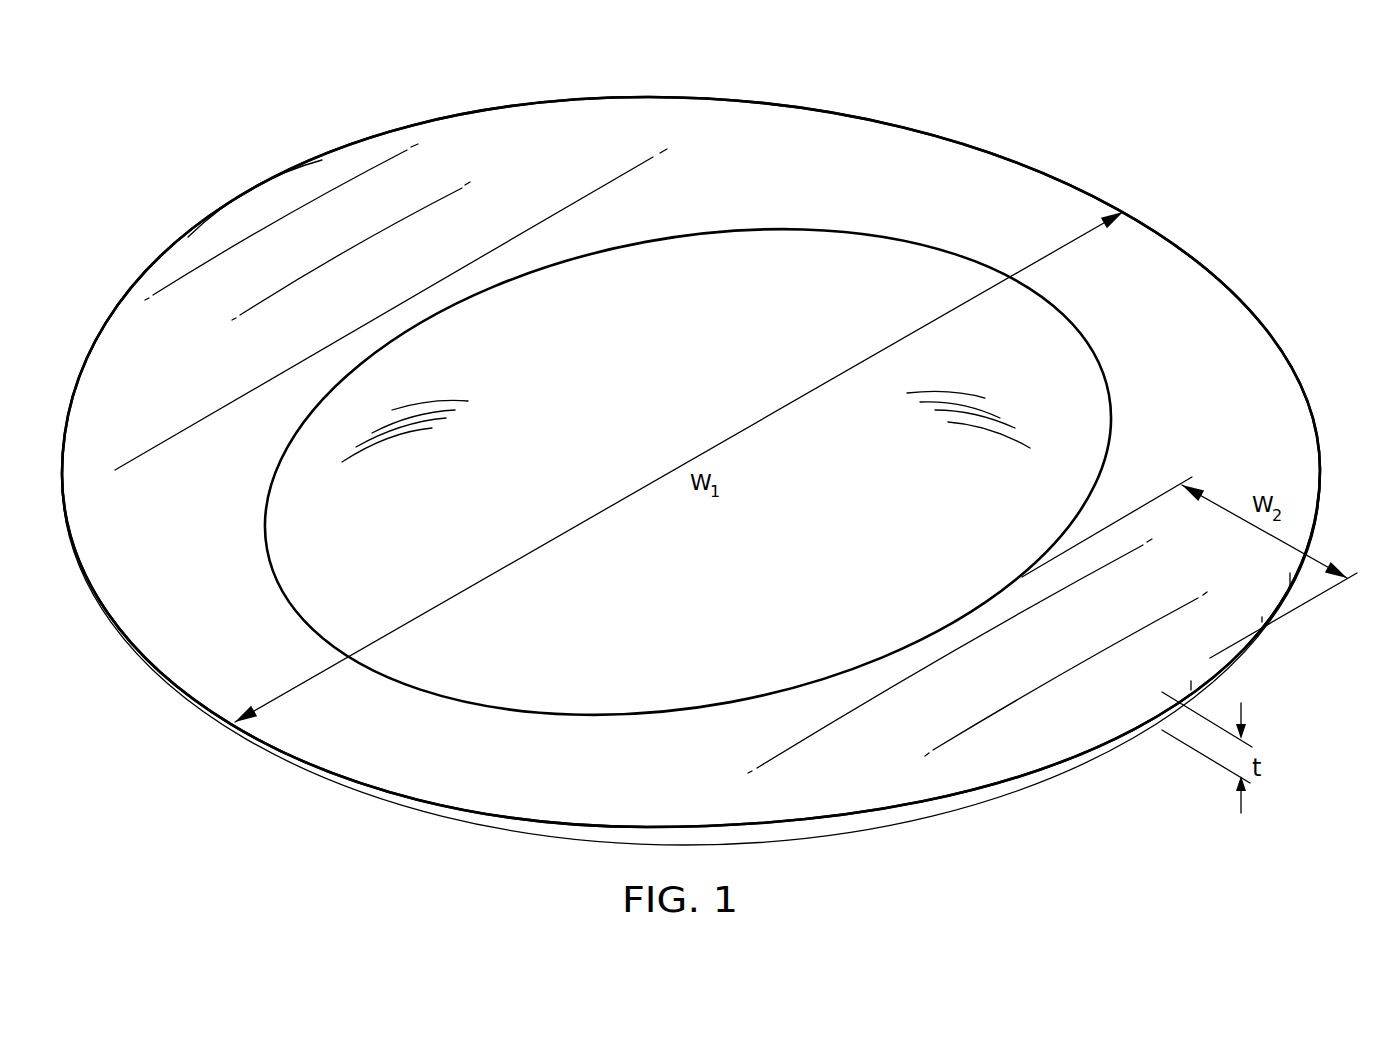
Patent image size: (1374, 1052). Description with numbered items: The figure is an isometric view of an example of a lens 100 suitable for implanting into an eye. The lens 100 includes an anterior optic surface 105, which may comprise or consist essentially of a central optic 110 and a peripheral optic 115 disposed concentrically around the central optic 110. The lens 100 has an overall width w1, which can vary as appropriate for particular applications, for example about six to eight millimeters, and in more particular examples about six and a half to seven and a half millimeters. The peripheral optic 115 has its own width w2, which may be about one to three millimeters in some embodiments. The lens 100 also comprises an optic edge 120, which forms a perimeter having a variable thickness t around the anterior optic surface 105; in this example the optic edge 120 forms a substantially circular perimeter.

The lens 100 is at (292, 72).
The anterior optic surface 105 is at (133, 323).
The central optic 110 is at (715, 242).
The peripheral optic 115 is at (1005, 173).
The optic edge 120 is at (1045, 767).